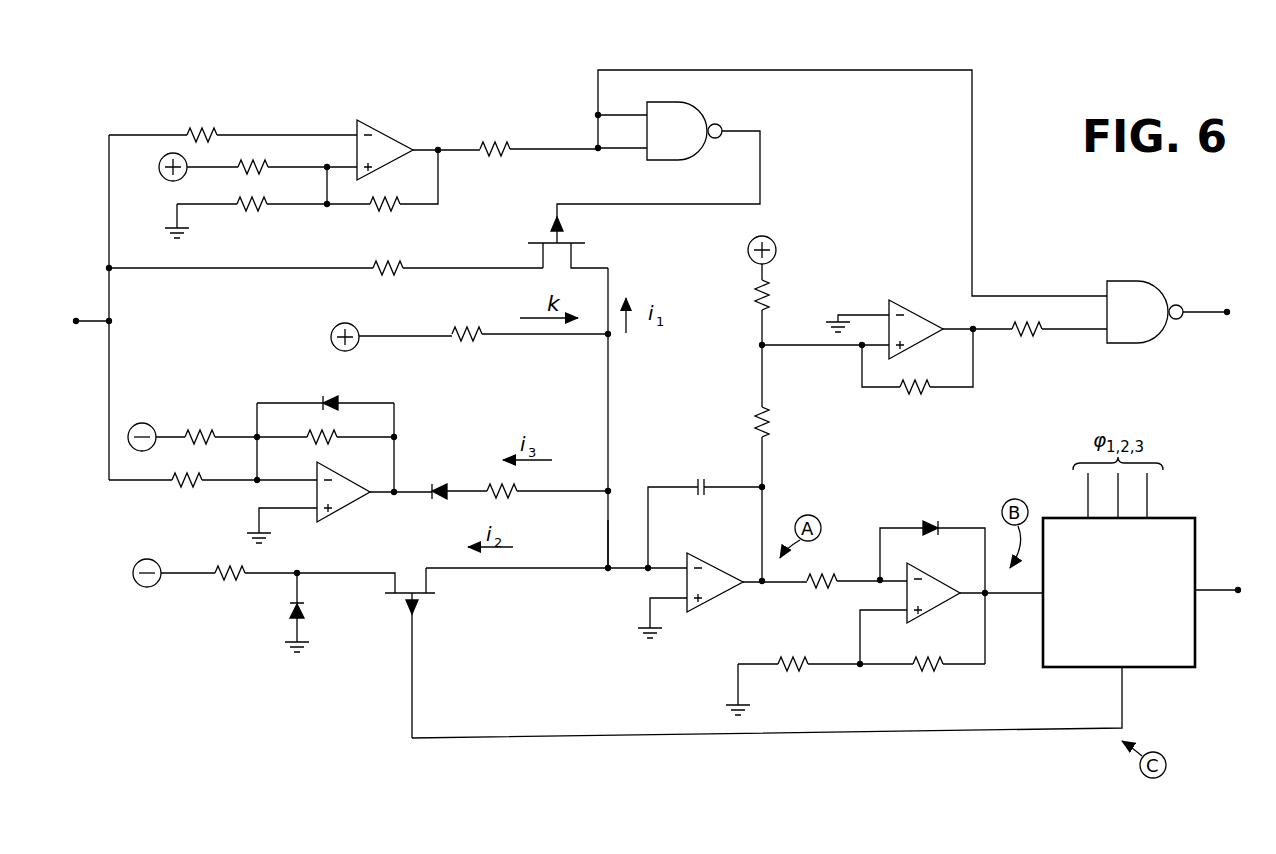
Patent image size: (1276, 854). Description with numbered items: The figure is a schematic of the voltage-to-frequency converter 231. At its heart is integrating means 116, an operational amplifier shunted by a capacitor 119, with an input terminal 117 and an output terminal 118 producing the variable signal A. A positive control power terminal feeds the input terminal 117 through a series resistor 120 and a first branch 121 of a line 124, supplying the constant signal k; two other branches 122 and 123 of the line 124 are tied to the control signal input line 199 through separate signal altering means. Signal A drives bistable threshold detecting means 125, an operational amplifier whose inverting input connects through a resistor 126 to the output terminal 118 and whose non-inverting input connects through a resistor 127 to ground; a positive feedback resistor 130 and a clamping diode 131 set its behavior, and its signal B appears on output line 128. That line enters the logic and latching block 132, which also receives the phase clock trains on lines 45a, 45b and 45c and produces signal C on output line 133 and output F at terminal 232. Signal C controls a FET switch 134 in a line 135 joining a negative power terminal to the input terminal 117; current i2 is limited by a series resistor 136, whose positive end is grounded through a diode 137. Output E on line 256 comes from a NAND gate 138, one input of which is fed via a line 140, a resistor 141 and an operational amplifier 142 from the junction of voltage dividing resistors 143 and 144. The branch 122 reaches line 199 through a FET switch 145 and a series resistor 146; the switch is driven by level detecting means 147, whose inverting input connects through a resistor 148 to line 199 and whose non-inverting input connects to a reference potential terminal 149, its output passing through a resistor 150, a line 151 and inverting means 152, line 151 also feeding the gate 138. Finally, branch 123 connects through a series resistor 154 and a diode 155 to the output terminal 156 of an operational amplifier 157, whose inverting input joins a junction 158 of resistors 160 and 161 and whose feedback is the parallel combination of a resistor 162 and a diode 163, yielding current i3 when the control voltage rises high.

The integrating means 116 is at (731, 645).
The input terminal 117 is at (606, 573).
The output terminal 118 is at (767, 590).
The capacitor 119 is at (718, 493).
The series resistor 120 is at (477, 345).
The first branch 121 is at (565, 338).
The branch 122 is at (615, 275).
The branch 123 is at (590, 488).
The line 124 is at (606, 536).
The bistable threshold detecting means 125 is at (973, 643).
The resistor 126 is at (826, 590).
The resistor 127 is at (797, 683).
The output line 128 is at (1025, 595).
The resistor 130 is at (932, 672).
The diode 131 is at (925, 518).
The logic and latching block 132 is at (1197, 548).
The output line 133 is at (893, 735).
The FET switch 134 is at (442, 594).
The line 135 is at (518, 573).
The series resistor 136 is at (228, 584).
The diode 137 is at (304, 611).
The NAND gate 138 is at (1150, 283).
The line 140 is at (1097, 330).
The resistor 141 is at (1028, 340).
The operational amplifier 142 is at (905, 306).
The voltage dividing resistor 143 is at (752, 300).
The voltage dividing resistor 144 is at (745, 410).
The FET switch 145 is at (588, 252).
The series resistor 146 is at (380, 280).
The level detecting means 147 is at (407, 108).
The resistor 148 is at (208, 122).
The reference potential terminal 149 is at (327, 165).
The resistor 150 is at (500, 133).
The line 151 is at (585, 150).
The inverting means 152 is at (705, 103).
The series resistor 154 is at (517, 497).
The diode 155 is at (436, 500).
The output terminal 156 is at (400, 488).
The operational amplifier 157 is at (358, 505).
The junction 158 is at (255, 484).
The resistor 160 is at (182, 496).
The resistor 161 is at (213, 405).
The resistor 162 is at (316, 450).
The diode 163 is at (338, 396).
The control signal input line 199 is at (85, 328).
The voltage-to-frequency converter 231 is at (1131, 218).
The output terminal F 232 is at (1235, 598).
The line 256 is at (1205, 316).
The line 45a is at (1087, 480).
The line 45b is at (1118, 487).
The line 45c is at (1147, 503).